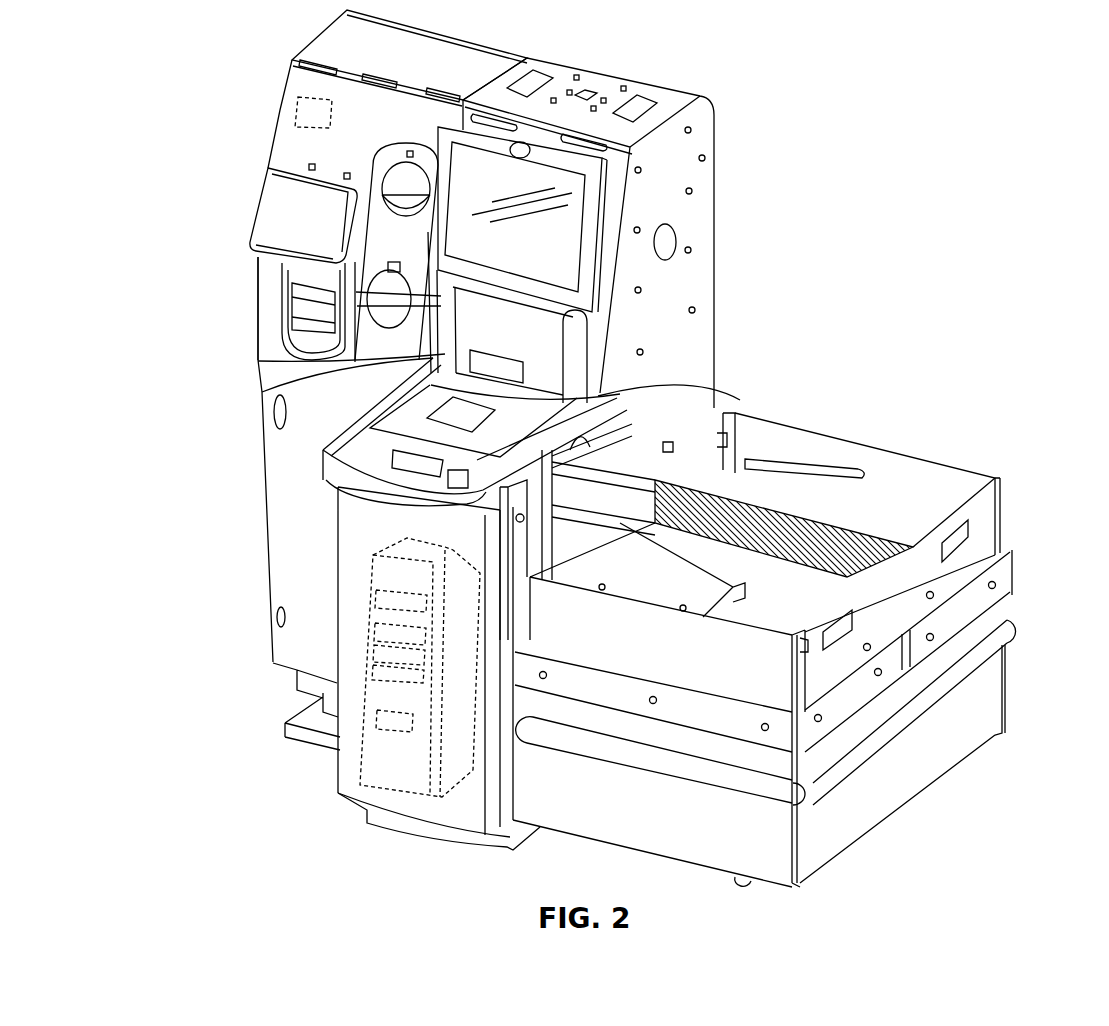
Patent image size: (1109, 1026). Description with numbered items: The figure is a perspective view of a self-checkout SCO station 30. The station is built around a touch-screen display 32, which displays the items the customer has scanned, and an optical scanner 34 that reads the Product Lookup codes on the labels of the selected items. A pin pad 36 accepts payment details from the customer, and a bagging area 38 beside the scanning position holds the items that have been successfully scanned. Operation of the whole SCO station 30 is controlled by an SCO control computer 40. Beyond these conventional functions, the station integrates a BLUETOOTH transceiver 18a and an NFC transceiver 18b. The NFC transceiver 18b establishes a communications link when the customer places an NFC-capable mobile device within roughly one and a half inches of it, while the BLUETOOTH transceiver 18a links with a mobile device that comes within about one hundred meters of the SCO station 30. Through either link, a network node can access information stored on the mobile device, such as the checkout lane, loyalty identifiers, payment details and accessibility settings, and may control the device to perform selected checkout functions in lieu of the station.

The SCO station 30 is at (934, 75).
The BLUETOOTH transceiver 18a is at (293, 103).
The NFC transceiver 18b is at (615, 392).
The touch-screen display 32 is at (537, 247).
The optical scanner 34 is at (422, 367).
The pin pad 36 is at (306, 232).
The bagging area 38 is at (782, 602).
The SCO control computer 40 is at (370, 657).